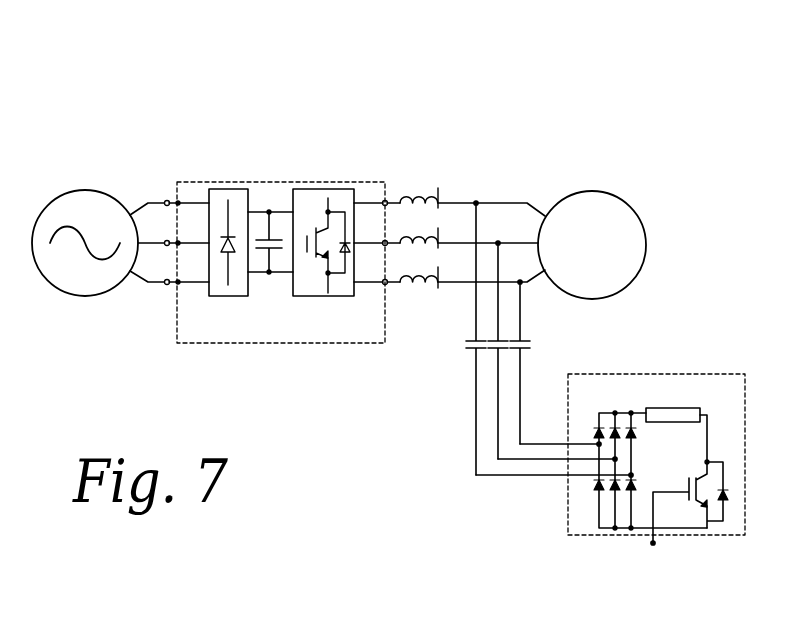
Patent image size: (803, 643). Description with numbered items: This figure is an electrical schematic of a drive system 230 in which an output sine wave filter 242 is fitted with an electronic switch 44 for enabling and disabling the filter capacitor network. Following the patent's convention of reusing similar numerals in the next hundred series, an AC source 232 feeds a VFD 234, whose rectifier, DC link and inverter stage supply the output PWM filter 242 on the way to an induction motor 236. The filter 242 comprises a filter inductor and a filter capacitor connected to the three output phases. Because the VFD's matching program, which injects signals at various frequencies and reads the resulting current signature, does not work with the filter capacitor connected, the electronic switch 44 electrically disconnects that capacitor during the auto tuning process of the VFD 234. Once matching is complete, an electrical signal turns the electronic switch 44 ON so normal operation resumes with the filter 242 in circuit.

The AC power source 232 is at (95, 188).
The VFD 234 is at (283, 180).
The LC output filter 230 is at (443, 137).
The output sine wave filter 242 is at (503, 157).
The induction motor (IM) 236 is at (600, 191).
The electronic switch 44 is at (566, 507).